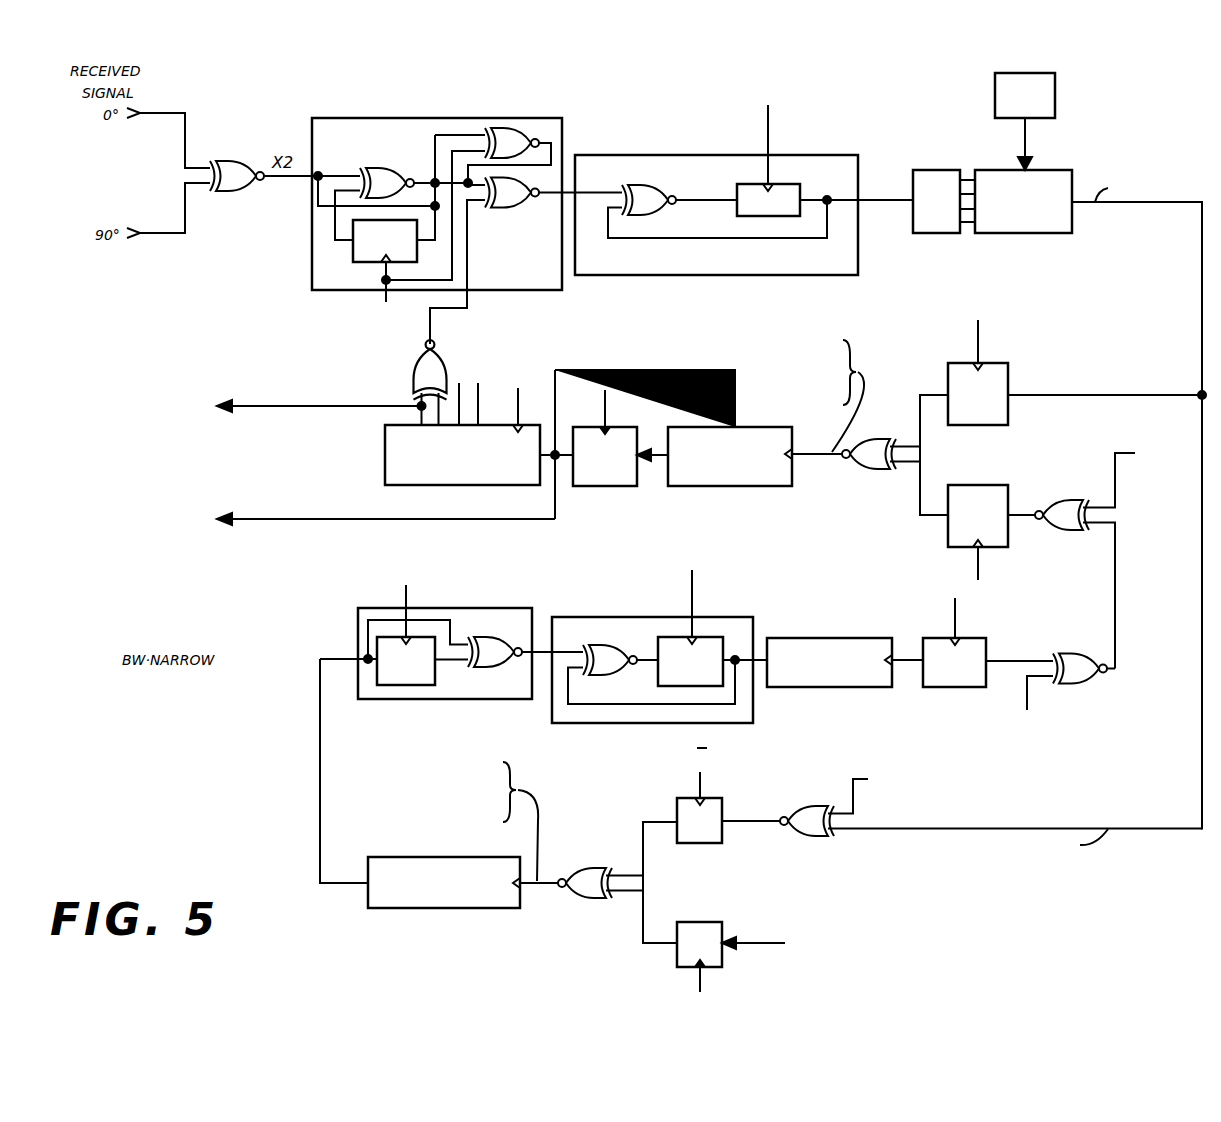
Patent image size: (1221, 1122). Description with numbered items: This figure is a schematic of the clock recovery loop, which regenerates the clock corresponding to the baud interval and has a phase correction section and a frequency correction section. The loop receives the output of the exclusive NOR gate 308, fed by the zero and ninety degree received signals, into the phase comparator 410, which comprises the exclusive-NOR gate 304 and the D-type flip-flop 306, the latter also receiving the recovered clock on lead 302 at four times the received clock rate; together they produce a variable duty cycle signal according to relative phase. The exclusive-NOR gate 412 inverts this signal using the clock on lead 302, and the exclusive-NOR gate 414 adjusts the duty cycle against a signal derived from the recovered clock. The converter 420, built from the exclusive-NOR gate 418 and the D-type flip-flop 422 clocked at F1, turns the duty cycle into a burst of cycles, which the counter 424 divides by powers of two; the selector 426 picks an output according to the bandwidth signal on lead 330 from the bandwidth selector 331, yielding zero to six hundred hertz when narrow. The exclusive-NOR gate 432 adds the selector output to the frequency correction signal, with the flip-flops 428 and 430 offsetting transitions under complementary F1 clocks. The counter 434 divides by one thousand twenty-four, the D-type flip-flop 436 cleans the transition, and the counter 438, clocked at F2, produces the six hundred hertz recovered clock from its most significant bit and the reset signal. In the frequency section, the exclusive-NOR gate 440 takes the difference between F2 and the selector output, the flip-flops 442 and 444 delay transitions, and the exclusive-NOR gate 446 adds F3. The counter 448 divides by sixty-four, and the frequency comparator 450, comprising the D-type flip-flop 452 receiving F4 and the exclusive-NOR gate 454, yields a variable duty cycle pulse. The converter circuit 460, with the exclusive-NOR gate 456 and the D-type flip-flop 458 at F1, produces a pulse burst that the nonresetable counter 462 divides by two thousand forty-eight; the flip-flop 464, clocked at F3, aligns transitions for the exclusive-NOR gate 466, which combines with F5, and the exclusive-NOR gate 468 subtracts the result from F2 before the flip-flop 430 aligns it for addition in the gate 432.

The lead 302 is at (366, 292).
The exclusive-NOR gate 304 is at (378, 168).
The D-type flip-flop 306 is at (364, 268).
The exclusive NOR gate 308 is at (236, 162).
The lead 330 is at (1025, 140).
The bandwidth selector 331 is at (1055, 97).
The phase comparator 410 is at (312, 232).
The exclusive-NOR gate 412 is at (523, 127).
The exclusive-NOR gate 414 is at (519, 208).
The exclusive-NOR gate 418 is at (657, 185).
The converter 420 is at (690, 275).
The D-type flip-flop 422 is at (775, 184).
The counter 424 is at (942, 170).
The selector 426 is at (1055, 170).
The flip-flop 428 is at (1005, 370).
The flip-flop 430 is at (975, 485).
The exclusive-NOR gate 432 is at (858, 470).
The counter 434 is at (721, 487).
The D-type flip-flop 436 is at (605, 487).
The counter 438 is at (465, 435).
The exclusive-NOR gate 440 is at (803, 807).
The flip-flop 442 is at (725, 843).
The D flip-flop 444 is at (694, 922).
The exclusive-NOR gate 446 is at (576, 903).
The counter 448 is at (445, 908).
The frequency comparator 450 is at (462, 699).
The D-type flip-flop 452 is at (435, 680).
The exclusive-NOR gate 454 is at (499, 637).
The exclusive-NOR gate 456 is at (607, 645).
The D-type flip-flop 458 is at (658, 676).
The converter circuit 460 is at (650, 723).
The nonresetable counter 462 is at (830, 638).
The flip-flop 464 is at (944, 638).
The exclusive-NOR gate 466 is at (1086, 683).
The exclusive-NOR gate 468 is at (1067, 500).